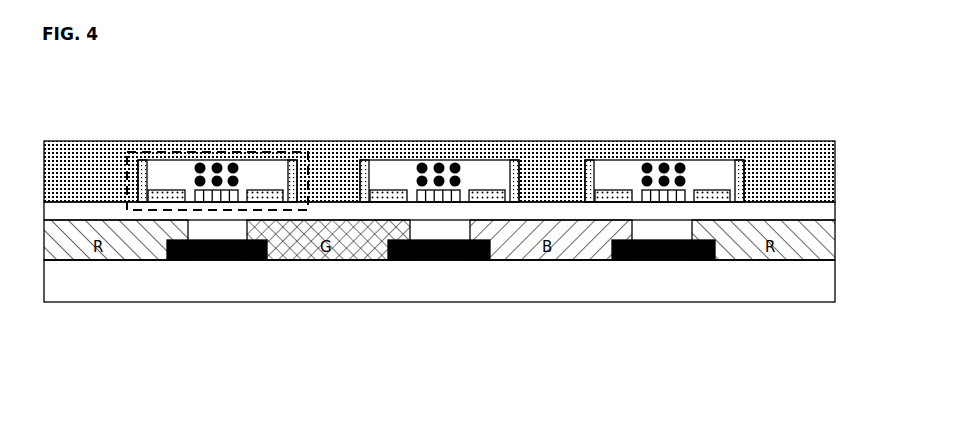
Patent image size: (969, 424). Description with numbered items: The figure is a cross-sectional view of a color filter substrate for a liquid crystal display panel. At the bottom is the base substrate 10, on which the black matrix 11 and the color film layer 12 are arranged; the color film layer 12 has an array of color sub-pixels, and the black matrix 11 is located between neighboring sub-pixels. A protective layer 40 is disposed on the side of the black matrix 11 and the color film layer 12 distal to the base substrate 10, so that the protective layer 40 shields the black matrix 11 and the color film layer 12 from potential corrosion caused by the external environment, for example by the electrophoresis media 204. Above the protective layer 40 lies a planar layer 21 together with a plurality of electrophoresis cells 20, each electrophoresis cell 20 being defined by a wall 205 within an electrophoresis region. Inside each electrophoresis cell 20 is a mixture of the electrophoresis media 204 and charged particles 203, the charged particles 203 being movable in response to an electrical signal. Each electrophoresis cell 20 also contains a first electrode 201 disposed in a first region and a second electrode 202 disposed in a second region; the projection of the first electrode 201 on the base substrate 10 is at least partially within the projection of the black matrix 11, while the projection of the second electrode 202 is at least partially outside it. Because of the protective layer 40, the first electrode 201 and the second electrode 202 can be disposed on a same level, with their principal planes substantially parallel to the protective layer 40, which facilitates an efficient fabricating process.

The base substrate 10 is at (530, 302).
The black matrix 11 is at (643, 260).
The color film layer 12 is at (742, 260).
The electrophoresis cell 20 is at (273, 210).
The planar layer 21 is at (550, 141).
The protective layer 40 is at (765, 210).
The first electrode 201 is at (222, 176).
The second electrode 202 is at (157, 188).
The charged particles 203 is at (238, 181).
The electrophoresis media 204 is at (173, 173).
The wall 205 is at (300, 187).